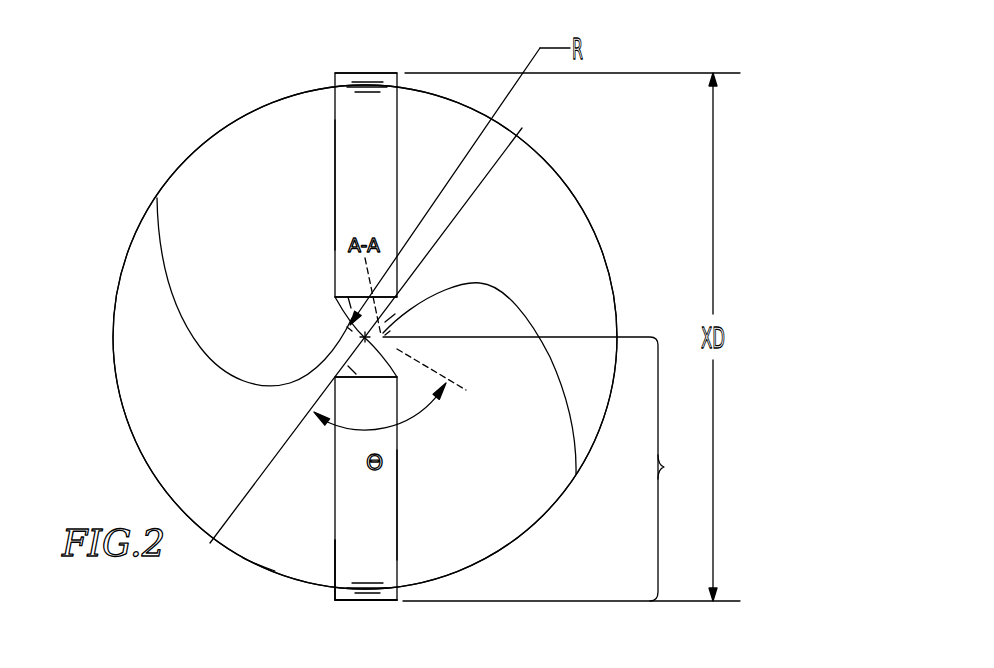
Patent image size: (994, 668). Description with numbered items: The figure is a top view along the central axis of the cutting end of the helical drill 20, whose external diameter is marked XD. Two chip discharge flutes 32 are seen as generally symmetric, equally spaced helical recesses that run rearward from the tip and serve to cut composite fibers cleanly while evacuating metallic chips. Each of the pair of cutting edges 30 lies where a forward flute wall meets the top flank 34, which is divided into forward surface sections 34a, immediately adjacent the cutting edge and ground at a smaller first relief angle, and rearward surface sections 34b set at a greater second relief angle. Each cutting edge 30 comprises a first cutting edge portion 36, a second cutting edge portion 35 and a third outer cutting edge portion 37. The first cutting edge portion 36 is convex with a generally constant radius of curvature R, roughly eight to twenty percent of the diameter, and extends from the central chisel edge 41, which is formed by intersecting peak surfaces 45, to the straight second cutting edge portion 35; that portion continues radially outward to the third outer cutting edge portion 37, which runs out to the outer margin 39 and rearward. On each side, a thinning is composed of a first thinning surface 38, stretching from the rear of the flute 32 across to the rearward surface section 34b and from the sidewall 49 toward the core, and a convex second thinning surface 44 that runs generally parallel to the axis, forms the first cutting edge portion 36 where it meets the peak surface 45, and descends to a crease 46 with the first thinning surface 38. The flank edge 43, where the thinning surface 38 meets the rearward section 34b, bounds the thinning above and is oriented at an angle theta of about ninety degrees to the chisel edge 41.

The helical drill 20 is at (106, 185).
The cutting edge 30 is at (262, 172).
The chip discharge flute 32 is at (210, 149).
The top flank 34 is at (217, 567).
The forward surface section 34a is at (337, 570).
The rearward surface section 34b is at (257, 545).
The second cutting edge portion 35 is at (335, 183).
The first cutting edge portion 36 is at (350, 327).
The third outer cutting edge portion 37 is at (335, 87).
The first thinning surface 38 is at (580, 223).
The outer margin 39 is at (367, 600).
The chisel edge 41 is at (353, 345).
The flank edge 43 is at (270, 461).
The second thinning surface 44 is at (347, 327).
The peak surface 45 is at (350, 310).
The crease 46 is at (390, 327).
The sidewall 49 is at (123, 407).